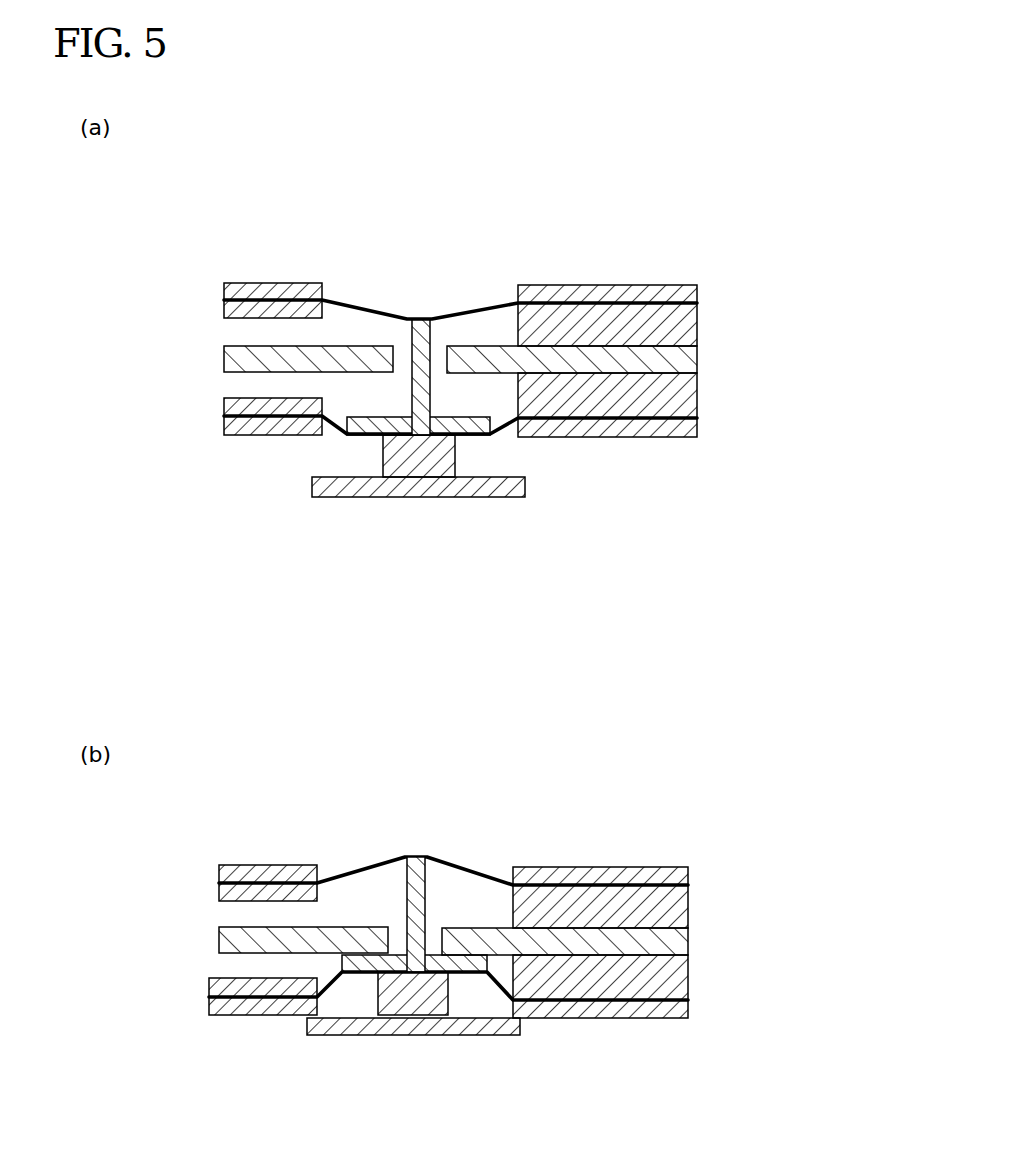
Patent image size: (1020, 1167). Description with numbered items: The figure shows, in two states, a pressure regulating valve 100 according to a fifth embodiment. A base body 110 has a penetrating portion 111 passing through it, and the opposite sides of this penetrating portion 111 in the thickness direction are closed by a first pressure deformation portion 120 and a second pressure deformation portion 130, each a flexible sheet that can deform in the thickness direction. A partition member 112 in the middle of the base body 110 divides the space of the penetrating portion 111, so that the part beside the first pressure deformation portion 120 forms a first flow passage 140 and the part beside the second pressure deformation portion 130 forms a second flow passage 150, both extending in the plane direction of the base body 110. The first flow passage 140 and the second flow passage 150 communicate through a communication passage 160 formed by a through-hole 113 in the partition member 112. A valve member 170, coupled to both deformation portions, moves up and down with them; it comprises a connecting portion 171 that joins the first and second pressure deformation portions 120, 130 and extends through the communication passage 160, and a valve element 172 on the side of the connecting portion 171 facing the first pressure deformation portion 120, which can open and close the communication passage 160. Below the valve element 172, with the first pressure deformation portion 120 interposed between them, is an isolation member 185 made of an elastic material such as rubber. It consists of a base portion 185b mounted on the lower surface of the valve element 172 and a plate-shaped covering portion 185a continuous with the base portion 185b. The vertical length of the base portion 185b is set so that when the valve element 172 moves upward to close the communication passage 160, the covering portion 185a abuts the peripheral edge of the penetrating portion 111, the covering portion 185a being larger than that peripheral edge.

The pressure regulating valve 100 is at (557, 190).
The base body 110 is at (616, 285).
The penetrating portion 111 is at (428, 294).
The partition member 112 is at (466, 358).
The through-hole 113 is at (410, 318).
The first pressure deformation portion 120 is at (330, 434).
The second pressure deformation portion 130 is at (357, 330).
The first flow passage 140 is at (375, 393).
The second flow passage 150 is at (398, 350).
The communication passage 160 is at (440, 367).
The valve member 170 is at (438, 390).
The connecting portion 171 is at (415, 388).
The valve element 172 is at (430, 435).
The isolation member 185 is at (528, 510).
The covering portion 185a is at (328, 497).
The base portion 185b is at (418, 465).